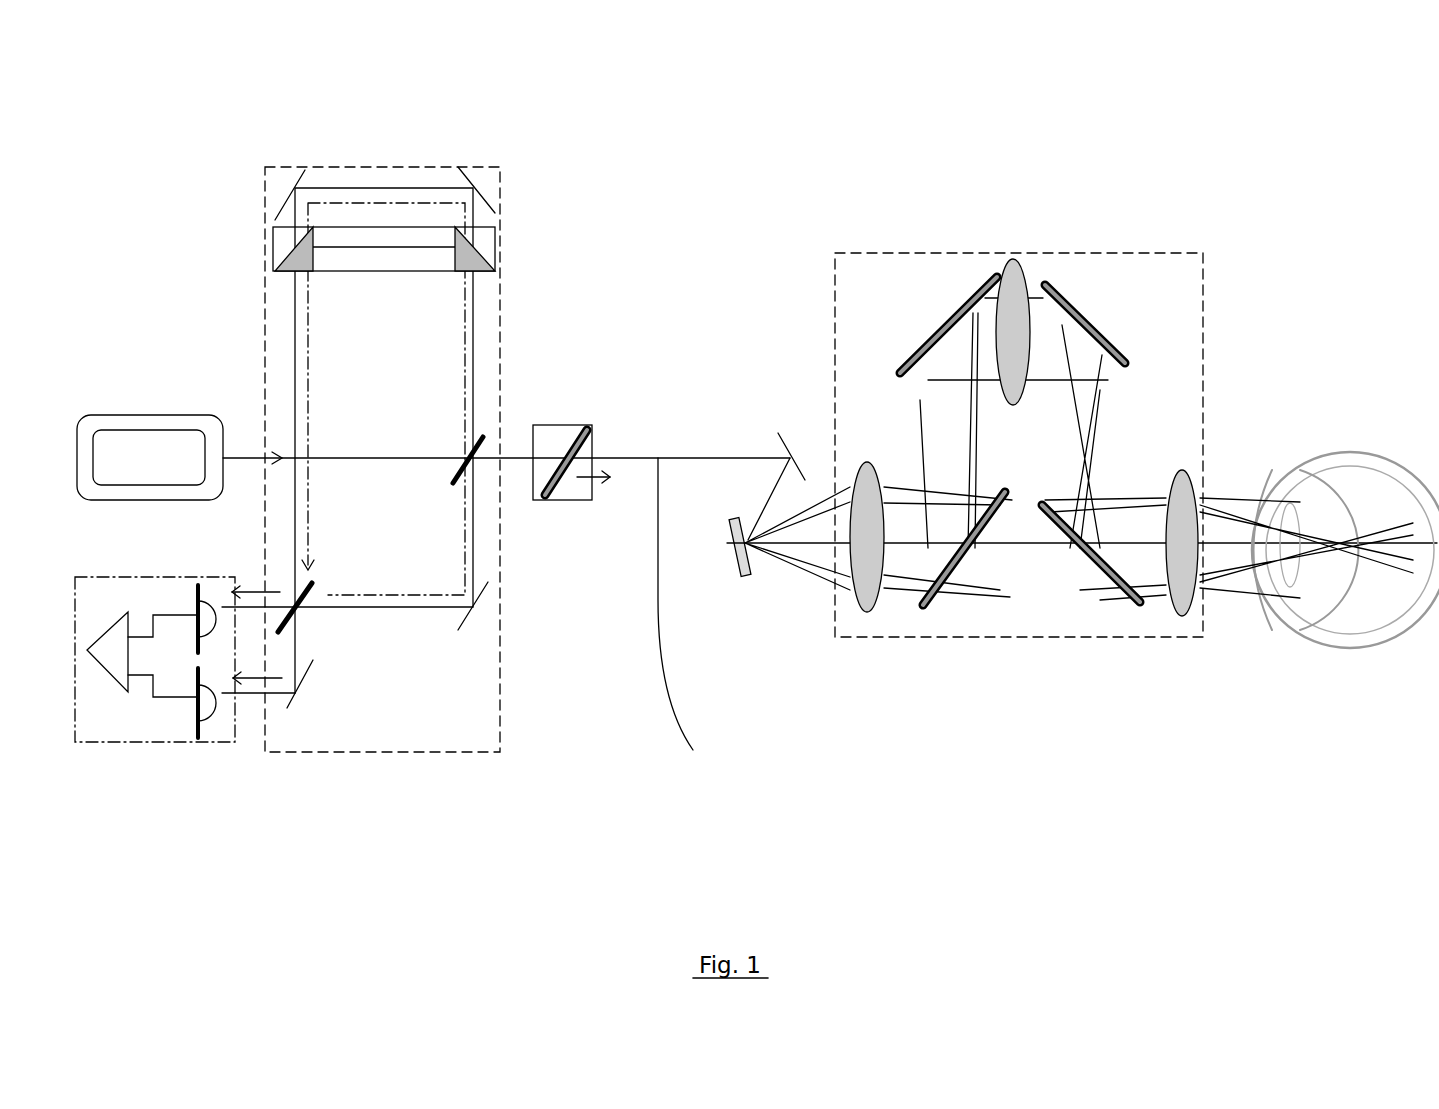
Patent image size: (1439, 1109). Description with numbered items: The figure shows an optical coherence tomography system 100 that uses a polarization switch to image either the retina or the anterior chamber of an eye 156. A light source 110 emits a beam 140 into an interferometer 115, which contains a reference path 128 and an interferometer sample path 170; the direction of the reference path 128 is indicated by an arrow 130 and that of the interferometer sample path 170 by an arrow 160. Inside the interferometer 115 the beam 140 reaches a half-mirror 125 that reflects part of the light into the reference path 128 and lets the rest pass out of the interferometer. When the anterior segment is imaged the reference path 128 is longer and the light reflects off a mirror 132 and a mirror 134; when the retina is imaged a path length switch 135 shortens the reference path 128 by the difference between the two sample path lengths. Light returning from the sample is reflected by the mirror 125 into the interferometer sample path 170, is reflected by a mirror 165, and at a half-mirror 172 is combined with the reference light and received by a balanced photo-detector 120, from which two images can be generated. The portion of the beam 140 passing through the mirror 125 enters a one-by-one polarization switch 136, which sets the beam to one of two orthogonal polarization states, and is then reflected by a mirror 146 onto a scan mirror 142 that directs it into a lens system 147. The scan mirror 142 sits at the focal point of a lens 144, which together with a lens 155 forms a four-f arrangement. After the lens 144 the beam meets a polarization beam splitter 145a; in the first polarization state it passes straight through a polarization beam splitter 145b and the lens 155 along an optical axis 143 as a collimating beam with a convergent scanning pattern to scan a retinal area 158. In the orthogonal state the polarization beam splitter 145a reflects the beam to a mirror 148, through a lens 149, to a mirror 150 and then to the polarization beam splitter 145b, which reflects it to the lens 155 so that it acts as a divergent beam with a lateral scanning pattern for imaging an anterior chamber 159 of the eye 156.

The optical coherence tomography system 100 is at (887, 846).
The light source 110 is at (128, 472).
The interferometer 115 is at (480, 744).
The balanced photo-detector 120 is at (132, 734).
The mirror 125 is at (467, 455).
The reference path 128 is at (353, 183).
The arrow 130 is at (413, 203).
The mirror 132 is at (473, 188).
The mirror 134 is at (290, 198).
The path length switch 135 is at (273, 247).
The polarization switch 136 is at (553, 503).
The beam 140 is at (689, 621).
The scan mirror 142 is at (745, 577).
The optical axis 143 is at (897, 547).
The lens 144 is at (867, 612).
The polarization beam splitter 145a is at (947, 572).
The polarization beam splitter 145b is at (1117, 583).
The mirror 146 is at (790, 450).
The lens system 147 is at (1190, 253).
The mirror 148 is at (948, 313).
The lens 149 is at (1020, 297).
The mirror 150 is at (1090, 327).
The lens 155 is at (1182, 617).
The eye 156 is at (1385, 637).
The retinal area 158 is at (1392, 530).
The anterior chamber 159 is at (1270, 500).
The arrow 160 is at (477, 603).
The mirror 165 is at (413, 595).
The interferometer sample path 170 is at (382, 607).
The mirror 172 is at (298, 615).